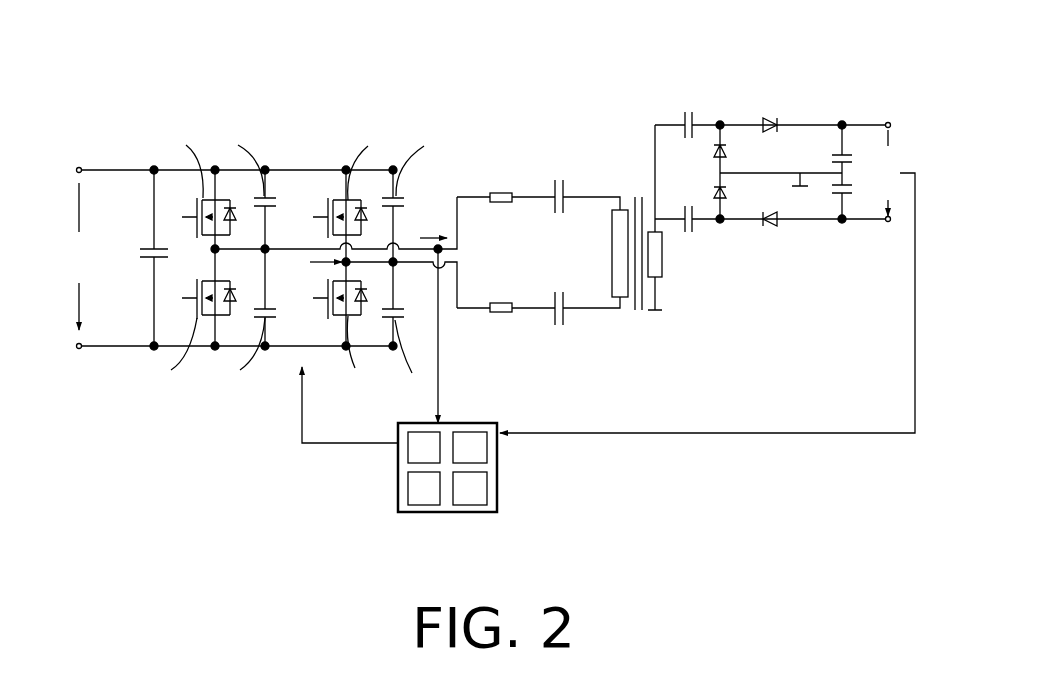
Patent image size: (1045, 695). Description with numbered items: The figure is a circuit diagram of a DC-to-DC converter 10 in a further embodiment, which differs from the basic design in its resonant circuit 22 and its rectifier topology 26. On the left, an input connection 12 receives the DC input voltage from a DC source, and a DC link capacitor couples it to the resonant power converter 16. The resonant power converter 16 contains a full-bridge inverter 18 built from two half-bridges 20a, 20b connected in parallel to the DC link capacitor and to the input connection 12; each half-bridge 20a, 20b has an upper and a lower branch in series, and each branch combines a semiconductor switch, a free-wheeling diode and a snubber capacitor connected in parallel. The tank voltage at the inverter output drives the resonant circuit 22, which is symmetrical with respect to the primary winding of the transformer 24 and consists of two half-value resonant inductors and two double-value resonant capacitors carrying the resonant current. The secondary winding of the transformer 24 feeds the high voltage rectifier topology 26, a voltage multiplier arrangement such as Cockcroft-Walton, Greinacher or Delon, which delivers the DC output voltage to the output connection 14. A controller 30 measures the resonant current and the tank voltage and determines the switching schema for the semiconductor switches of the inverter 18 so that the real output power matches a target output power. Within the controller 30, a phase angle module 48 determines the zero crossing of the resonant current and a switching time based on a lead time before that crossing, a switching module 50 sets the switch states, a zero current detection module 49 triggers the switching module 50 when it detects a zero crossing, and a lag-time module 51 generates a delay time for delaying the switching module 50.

The DC-to-DC converter 10 is at (168, 50).
The input connection 12 is at (92, 108).
The output connection 14 is at (885, 100).
The resonant power converter 16 is at (212, 460).
The full-bridge inverter 18 is at (292, 110).
The half-bridge 20a is at (223, 107).
The half-bridge 20b is at (362, 108).
The resonant circuit 22 is at (530, 110).
The transformer 24 is at (640, 105).
The rectifier topology 26 is at (755, 95).
The controller 30 is at (448, 512).
The phase angle module 48 is at (487, 452).
The zero current detection module 49 is at (407, 496).
The switching module 50 is at (407, 450).
The lag-time module 51 is at (487, 497).